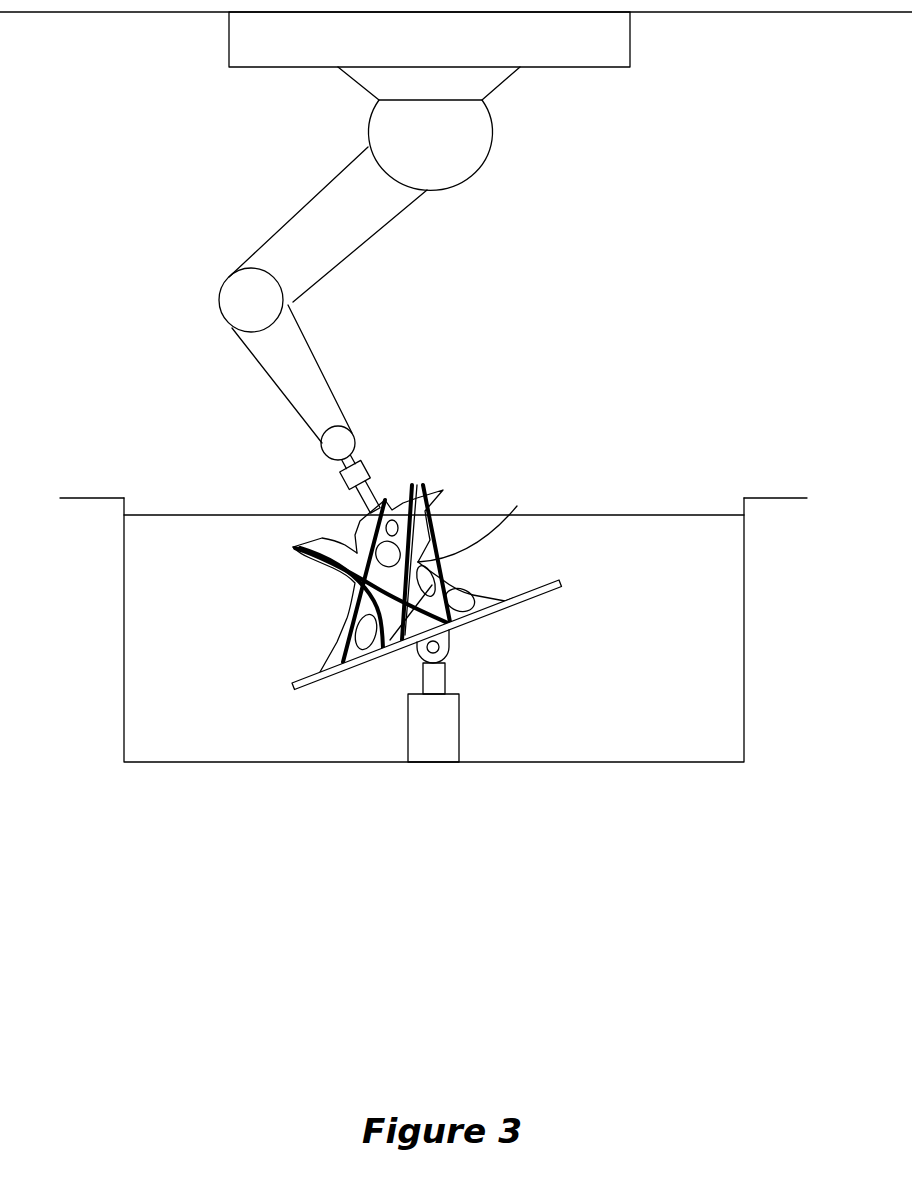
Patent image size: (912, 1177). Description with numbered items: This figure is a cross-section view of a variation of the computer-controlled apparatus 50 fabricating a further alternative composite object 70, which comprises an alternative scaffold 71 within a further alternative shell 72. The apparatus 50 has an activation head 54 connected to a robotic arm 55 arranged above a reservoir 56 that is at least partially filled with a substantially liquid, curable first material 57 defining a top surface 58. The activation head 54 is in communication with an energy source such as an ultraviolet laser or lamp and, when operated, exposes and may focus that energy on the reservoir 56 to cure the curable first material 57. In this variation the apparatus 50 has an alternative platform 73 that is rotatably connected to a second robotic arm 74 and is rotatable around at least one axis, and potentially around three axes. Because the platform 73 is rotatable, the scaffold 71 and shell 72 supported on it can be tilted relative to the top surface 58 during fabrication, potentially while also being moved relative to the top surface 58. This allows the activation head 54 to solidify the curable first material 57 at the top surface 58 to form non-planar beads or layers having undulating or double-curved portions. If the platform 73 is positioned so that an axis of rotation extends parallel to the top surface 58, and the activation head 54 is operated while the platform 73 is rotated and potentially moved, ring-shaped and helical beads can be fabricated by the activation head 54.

The computer-controlled apparatus 50 is at (456, 262).
The activation head 54 is at (365, 473).
The robotic arm 55 is at (357, 230).
The reservoir 56 is at (745, 639).
The curable first material 57 is at (226, 712).
The top surface 58 is at (713, 515).
The composite object 70 is at (395, 610).
The scaffold 71 is at (500, 516).
The shell 72 is at (442, 511).
The platform 73 is at (550, 590).
The second robotic arm 74 is at (460, 733).